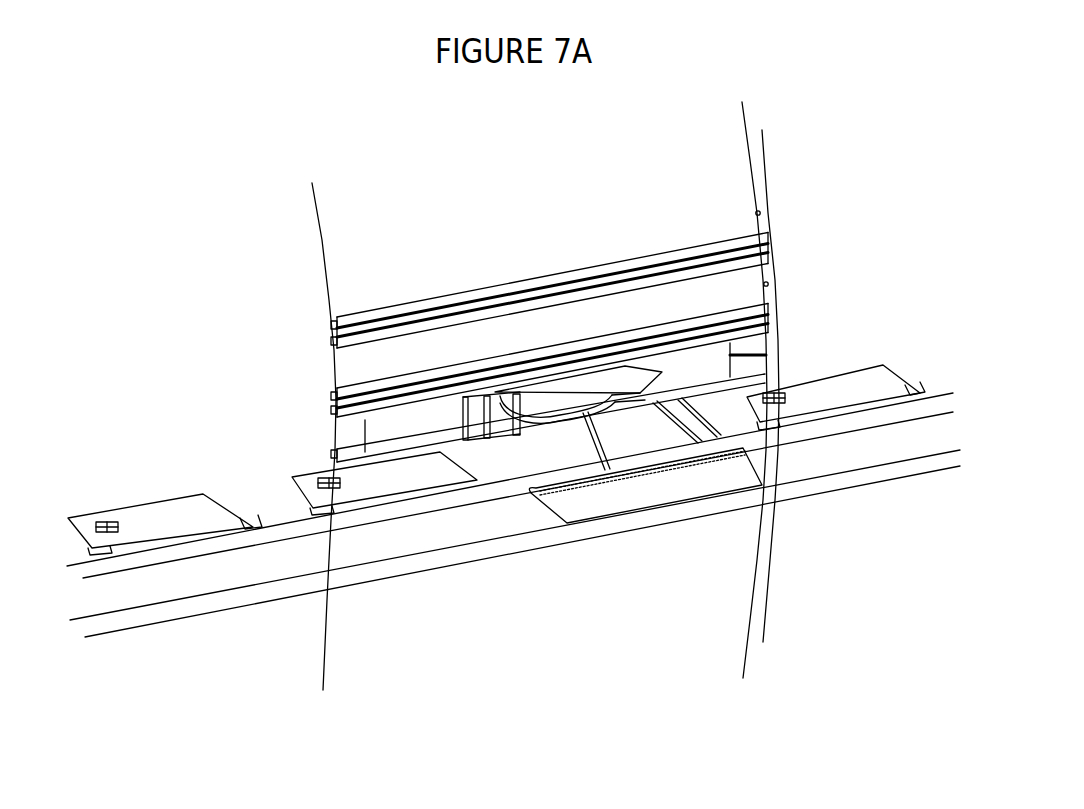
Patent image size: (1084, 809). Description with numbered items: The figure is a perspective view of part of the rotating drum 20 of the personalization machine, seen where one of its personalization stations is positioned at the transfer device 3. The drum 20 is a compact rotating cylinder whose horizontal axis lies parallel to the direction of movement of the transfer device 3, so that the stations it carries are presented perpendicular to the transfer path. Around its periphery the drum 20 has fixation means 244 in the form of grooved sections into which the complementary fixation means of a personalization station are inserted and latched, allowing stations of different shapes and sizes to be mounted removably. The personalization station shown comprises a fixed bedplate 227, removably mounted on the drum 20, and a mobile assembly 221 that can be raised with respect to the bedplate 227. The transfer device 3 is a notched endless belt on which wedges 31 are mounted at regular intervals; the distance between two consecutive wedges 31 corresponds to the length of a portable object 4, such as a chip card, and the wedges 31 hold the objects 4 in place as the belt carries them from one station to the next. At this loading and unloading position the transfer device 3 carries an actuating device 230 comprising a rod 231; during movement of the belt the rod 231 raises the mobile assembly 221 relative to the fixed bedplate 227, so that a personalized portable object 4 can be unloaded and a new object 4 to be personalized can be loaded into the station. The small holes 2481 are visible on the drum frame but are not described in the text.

The rotating drum 20 is at (775, 172).
The positioning holes 2481 is at (761, 214).
The fixation means 244 is at (350, 368).
The fixed bedplate 227 is at (470, 437).
The mobile assembly 221 is at (565, 403).
The rod 231 is at (640, 464).
The transfer device 3 is at (297, 538).
The wedges 31 is at (193, 495).
The portable object 4 is at (852, 386).
The actuating device 230 is at (560, 518).